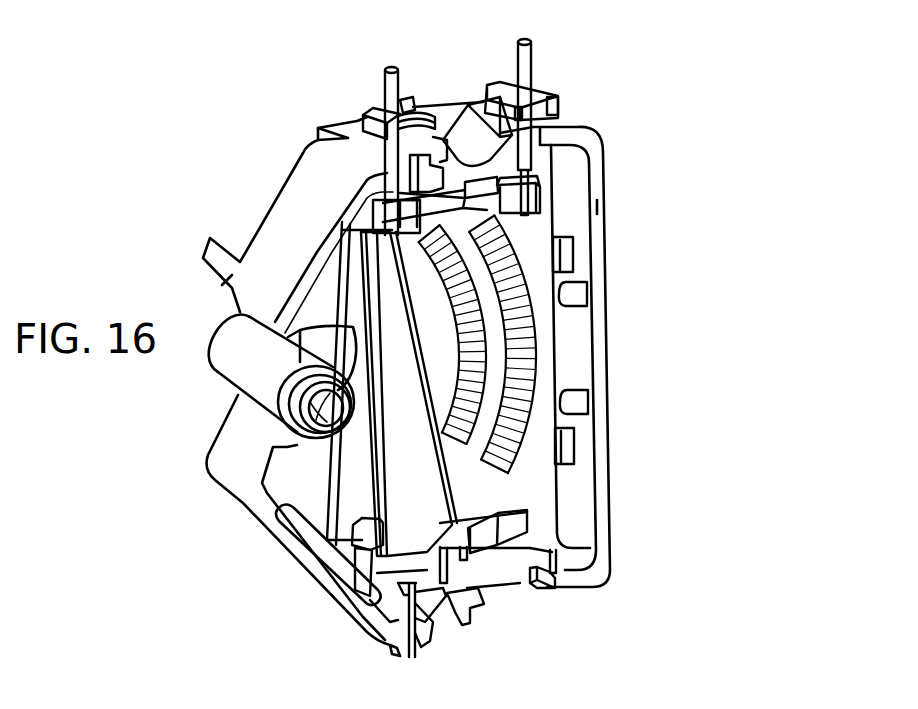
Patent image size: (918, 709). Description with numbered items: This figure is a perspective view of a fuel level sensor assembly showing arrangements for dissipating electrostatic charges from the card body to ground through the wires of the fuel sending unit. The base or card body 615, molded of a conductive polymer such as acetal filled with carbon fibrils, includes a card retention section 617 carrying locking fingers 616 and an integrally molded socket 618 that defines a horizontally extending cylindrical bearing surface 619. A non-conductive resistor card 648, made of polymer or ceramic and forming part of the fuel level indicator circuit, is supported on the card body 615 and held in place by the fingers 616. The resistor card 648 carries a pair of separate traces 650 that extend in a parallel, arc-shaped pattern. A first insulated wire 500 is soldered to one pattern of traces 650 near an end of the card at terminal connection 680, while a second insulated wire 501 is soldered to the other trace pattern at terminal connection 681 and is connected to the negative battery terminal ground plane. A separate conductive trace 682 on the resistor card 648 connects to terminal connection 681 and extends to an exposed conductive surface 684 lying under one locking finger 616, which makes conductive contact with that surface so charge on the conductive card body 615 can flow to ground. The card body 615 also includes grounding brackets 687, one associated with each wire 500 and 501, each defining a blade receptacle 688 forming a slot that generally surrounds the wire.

The insulated wire 500 is at (532, 52).
The insulated wire 501 is at (390, 80).
The card body 615 is at (597, 217).
The locking fingers 616 is at (490, 207).
The card retention section 617 is at (296, 157).
The socket 618 is at (227, 363).
The cylindrical bearing surface 619 is at (273, 447).
The resistor card 648 is at (403, 437).
The traces 650 is at (533, 337).
The terminal connection 680 is at (592, 187).
The terminal connection 681 is at (395, 223).
The conductive trace 682 is at (445, 495).
The exposed conductive surface 684 is at (517, 512).
The grounding brackets 687 is at (378, 105).
The blade receptacle 688 is at (407, 98).